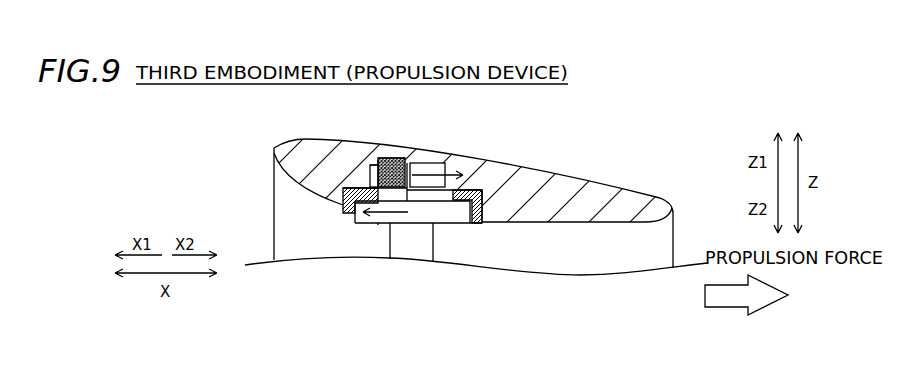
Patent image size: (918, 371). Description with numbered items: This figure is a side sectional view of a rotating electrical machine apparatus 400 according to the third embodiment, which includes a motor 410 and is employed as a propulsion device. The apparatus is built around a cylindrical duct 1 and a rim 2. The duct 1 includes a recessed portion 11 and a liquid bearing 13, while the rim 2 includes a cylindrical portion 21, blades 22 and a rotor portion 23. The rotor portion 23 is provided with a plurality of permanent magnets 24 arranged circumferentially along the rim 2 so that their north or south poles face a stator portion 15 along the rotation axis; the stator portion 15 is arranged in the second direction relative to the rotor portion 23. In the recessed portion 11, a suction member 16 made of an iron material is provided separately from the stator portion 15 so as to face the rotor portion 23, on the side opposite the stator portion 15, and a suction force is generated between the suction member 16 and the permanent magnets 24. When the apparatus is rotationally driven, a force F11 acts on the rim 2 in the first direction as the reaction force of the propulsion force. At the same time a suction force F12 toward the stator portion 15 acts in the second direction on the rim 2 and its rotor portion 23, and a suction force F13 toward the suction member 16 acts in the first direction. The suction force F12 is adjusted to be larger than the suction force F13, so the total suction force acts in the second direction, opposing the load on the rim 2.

The rotating electrical machine apparatus 400 is at (553, 136).
The motor 410 is at (487, 237).
The rim 2 is at (430, 203).
The liquid bearing 13 is at (347, 204).
The recessed portion 11 is at (398, 158).
The permanent magnets 24 is at (370, 172).
The suction member 16 is at (372, 163).
The rotor portion 23 is at (386, 158).
The stator portion 15 is at (428, 163).
The suction force F12 is at (458, 172).
The suction force F13 is at (378, 160).
The duct 1 is at (488, 189).
The cylindrical portion 21 is at (361, 213).
The force F11 is at (378, 225).
The blades 22 is at (428, 250).